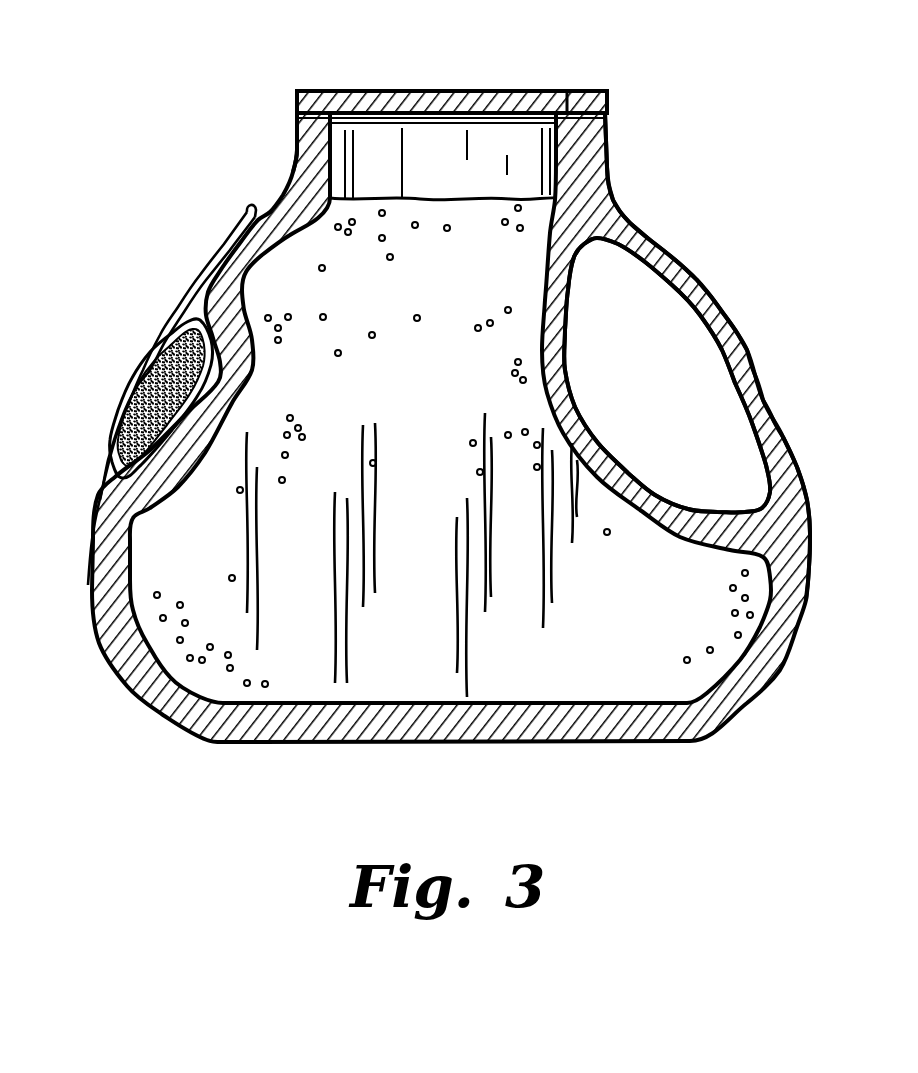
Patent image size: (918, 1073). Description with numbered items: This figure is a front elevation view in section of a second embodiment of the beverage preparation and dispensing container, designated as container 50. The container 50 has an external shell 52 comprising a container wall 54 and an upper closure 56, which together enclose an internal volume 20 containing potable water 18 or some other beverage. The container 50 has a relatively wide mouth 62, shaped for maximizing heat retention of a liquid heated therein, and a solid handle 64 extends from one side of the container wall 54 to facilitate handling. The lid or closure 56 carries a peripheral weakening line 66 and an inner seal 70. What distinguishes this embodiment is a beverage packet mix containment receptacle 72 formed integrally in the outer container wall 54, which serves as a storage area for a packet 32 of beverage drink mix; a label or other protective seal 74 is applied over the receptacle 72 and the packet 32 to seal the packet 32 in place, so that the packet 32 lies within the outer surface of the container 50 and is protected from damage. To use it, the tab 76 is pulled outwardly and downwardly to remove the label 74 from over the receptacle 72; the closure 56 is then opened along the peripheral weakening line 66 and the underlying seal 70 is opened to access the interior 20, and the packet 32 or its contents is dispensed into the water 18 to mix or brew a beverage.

The potable water 18 is at (427, 196).
The internal volume 20 is at (438, 385).
The packet of beverage drink mix 32 is at (157, 362).
The container 50 is at (232, 812).
The external shell 52 is at (297, 108).
The container wall 54 is at (133, 690).
The upper closure 56 is at (450, 88).
The mouth 62 is at (560, 100).
The handle 64 is at (730, 313).
The peripheral weakening line 66 is at (328, 100).
The inner seal 70 is at (477, 121).
The beverage packet mix containment receptacle 72 is at (180, 320).
The label or protective seal 74 is at (125, 397).
The tab 76 is at (247, 212).